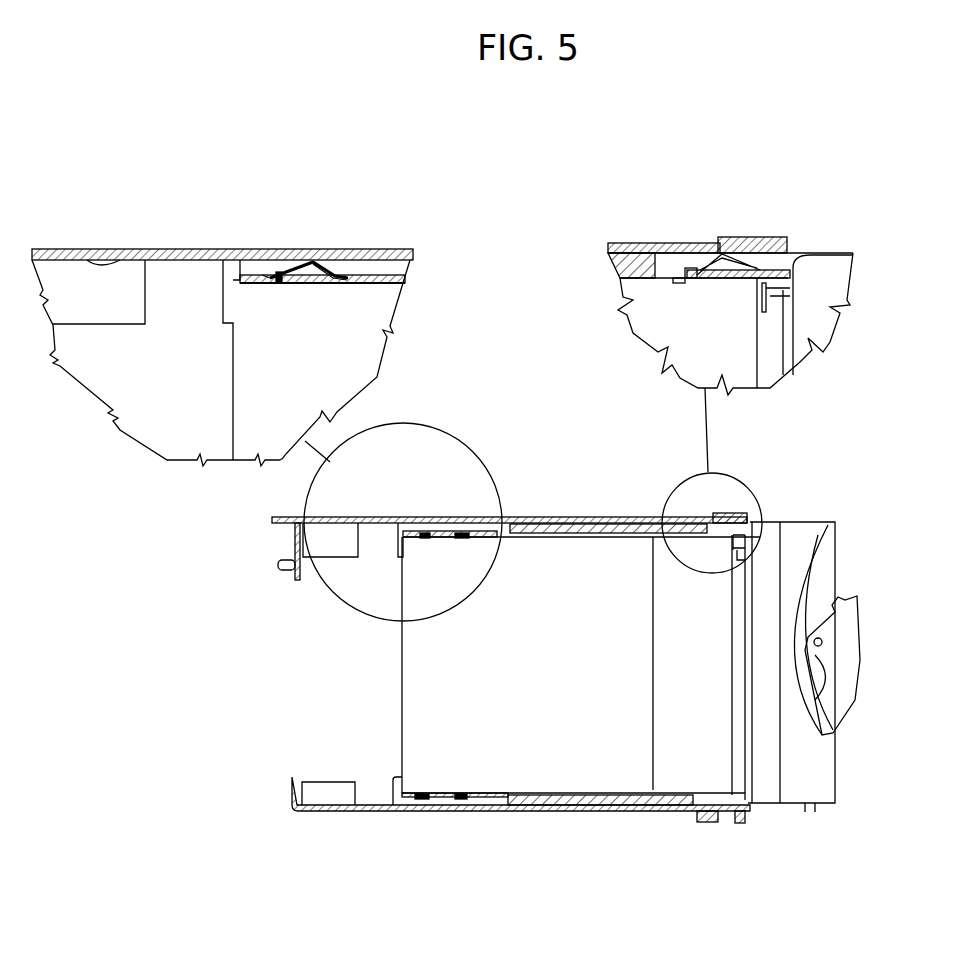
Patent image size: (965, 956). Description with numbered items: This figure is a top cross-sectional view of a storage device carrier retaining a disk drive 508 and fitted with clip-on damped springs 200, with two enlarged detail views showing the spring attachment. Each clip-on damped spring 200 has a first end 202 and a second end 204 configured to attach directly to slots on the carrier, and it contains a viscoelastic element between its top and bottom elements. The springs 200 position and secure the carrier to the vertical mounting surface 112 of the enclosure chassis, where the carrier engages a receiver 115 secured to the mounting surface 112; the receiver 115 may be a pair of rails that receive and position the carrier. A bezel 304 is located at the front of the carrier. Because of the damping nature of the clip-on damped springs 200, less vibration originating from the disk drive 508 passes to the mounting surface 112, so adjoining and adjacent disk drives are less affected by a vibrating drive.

The mounting surface 112 is at (145, 249).
The clip-on damped spring 200 is at (345, 267).
The second end 204 is at (347, 283).
The first end 202 is at (273, 285).
The receiver 115 is at (580, 518).
The bezel 304 is at (798, 524).
The disk drive 508 is at (465, 710).